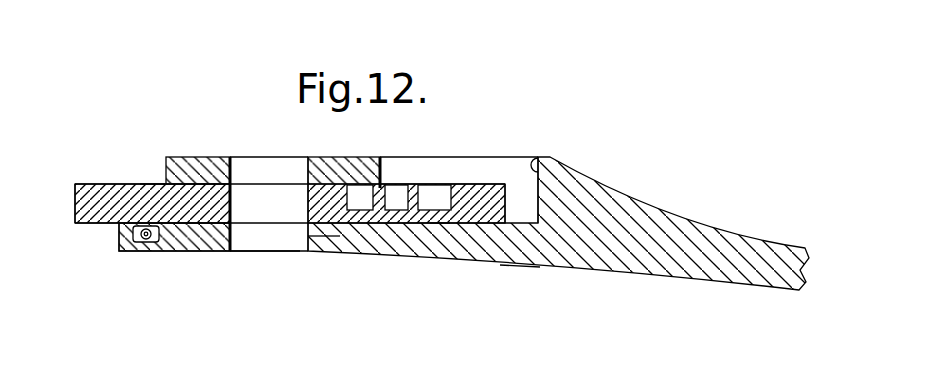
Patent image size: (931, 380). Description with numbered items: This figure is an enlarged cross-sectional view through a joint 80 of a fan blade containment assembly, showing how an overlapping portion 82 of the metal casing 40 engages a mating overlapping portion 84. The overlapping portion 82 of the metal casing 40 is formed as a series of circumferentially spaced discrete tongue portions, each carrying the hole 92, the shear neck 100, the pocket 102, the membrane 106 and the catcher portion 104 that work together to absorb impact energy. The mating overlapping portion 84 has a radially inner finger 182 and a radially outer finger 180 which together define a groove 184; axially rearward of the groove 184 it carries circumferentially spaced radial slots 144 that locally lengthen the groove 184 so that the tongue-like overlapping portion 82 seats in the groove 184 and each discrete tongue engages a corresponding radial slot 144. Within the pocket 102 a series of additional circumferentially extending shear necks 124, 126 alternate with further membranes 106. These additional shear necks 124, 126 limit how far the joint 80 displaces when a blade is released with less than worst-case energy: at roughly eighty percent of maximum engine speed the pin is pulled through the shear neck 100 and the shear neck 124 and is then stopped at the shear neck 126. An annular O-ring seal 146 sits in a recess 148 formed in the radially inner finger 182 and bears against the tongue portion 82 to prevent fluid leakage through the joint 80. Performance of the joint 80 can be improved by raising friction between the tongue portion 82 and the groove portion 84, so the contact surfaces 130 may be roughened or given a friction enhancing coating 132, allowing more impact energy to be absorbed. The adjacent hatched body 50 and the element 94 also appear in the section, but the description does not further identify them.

The metal casing 40 is at (93, 224).
The body member 50 is at (757, 237).
The joint 80 is at (530, 101).
The overlapping portion 82 is at (132, 184).
The overlapping portion 84 is at (520, 266).
The hole 92 is at (237, 201).
The shoulder ring 94 is at (242, 142).
The shear neck 100 is at (353, 192).
The pocket 102 is at (460, 184).
The catcher portion 104 is at (500, 207).
The membrane 106 is at (402, 223).
The shear neck 124 is at (380, 190).
The shear neck 126 is at (432, 184).
The contact surfaces 130 is at (150, 184).
The friction enhancing coating 132 is at (184, 157).
The radial slots 144 is at (538, 157).
The annular O-ring seal 146 is at (141, 250).
The recess 148 is at (153, 243).
The radially outer finger 180 is at (341, 157).
The radially inner finger 182 is at (330, 236).
The groove 184 is at (437, 225).